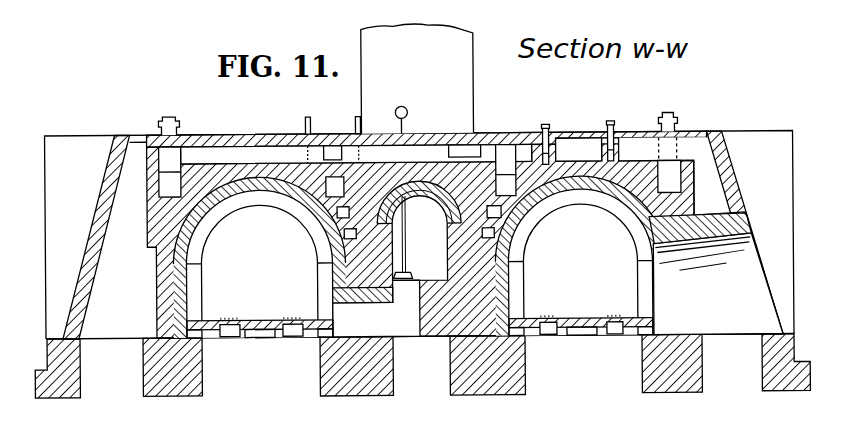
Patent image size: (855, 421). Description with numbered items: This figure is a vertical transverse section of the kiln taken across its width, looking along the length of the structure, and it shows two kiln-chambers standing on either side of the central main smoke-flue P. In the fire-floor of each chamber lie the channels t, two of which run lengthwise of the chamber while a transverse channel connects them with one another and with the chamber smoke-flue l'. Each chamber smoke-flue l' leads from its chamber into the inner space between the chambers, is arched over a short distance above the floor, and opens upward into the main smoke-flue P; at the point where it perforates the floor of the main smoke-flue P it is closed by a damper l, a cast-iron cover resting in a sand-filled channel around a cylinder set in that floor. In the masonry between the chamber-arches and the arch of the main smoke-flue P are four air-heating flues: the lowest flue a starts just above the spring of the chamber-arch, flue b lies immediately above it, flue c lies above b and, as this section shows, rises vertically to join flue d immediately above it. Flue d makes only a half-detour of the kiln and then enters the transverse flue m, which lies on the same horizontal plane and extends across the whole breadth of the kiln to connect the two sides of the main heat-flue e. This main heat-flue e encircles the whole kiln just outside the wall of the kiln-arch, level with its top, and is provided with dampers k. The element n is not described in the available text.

The damper k is at (171, 118).
The channel n is at (253, 160).
The flue d is at (330, 158).
The flue c is at (338, 181).
The transverse flue m is at (465, 152).
The main heat-flue e is at (420, 170).
The flue b is at (340, 218).
The flue a is at (348, 236).
The main smoke-flue P is at (420, 238).
The damper l is at (376, 308).
The chamber smoke-flue l' is at (363, 310).
The channel t is at (230, 339).